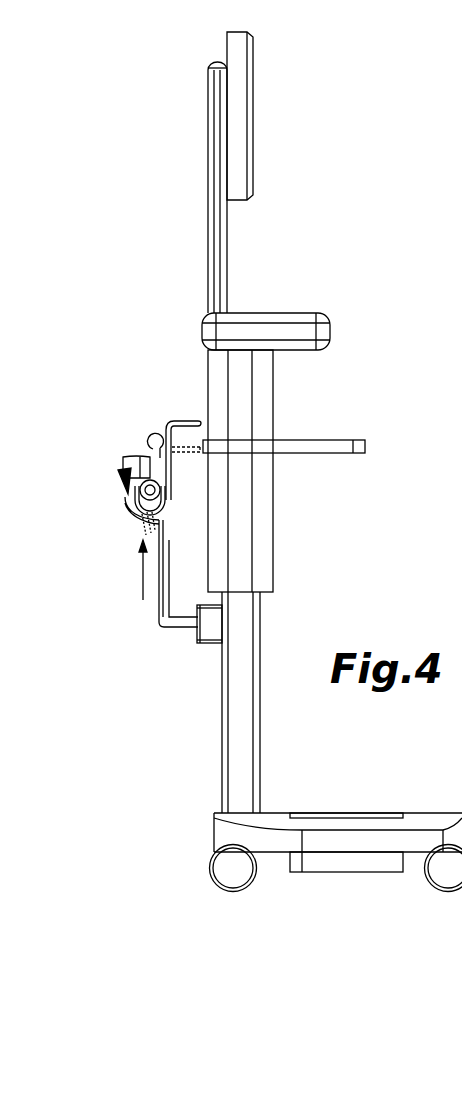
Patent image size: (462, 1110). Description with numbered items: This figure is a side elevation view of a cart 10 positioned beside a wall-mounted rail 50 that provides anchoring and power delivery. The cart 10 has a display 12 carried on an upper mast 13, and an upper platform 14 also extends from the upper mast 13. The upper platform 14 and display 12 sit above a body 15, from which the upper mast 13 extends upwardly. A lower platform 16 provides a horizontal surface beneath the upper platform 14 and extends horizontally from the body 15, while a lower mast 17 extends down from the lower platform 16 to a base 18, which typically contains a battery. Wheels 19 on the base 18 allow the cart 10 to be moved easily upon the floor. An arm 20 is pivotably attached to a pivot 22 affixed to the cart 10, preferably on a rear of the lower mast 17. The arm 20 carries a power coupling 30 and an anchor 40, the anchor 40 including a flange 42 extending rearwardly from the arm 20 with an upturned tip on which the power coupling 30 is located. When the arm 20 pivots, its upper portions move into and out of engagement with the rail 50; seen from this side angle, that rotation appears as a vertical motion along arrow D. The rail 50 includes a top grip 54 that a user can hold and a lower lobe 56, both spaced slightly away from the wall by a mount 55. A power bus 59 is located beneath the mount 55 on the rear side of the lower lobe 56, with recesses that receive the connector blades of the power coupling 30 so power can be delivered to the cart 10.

The cart 10 is at (184, 733).
The display 12 is at (250, 98).
The upper mast 13 is at (211, 250).
The upper platform 14 is at (287, 313).
The body 15 is at (265, 470).
The lower platform 16 is at (358, 447).
The lower mast 17 is at (250, 733).
The base 18 is at (363, 872).
The wheels 19 is at (214, 868).
The arm 20 is at (186, 419).
The pivot 22 is at (210, 645).
The power coupling 30 is at (125, 478).
The anchor 40 is at (133, 505).
The flange 42 is at (160, 515).
The rail 50 is at (132, 455).
The top grip 54 is at (155, 432).
The mount 55 is at (130, 487).
The lower lobe 56 is at (160, 493).
The power bus 59 is at (158, 483).
The arrow D is at (142, 577).